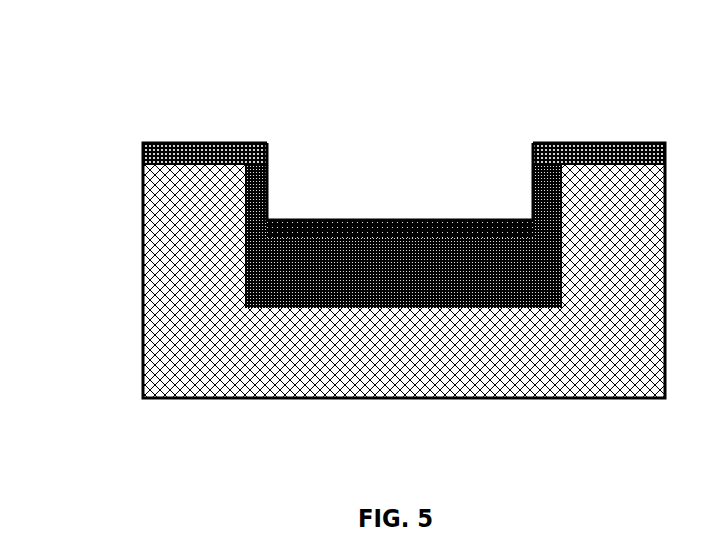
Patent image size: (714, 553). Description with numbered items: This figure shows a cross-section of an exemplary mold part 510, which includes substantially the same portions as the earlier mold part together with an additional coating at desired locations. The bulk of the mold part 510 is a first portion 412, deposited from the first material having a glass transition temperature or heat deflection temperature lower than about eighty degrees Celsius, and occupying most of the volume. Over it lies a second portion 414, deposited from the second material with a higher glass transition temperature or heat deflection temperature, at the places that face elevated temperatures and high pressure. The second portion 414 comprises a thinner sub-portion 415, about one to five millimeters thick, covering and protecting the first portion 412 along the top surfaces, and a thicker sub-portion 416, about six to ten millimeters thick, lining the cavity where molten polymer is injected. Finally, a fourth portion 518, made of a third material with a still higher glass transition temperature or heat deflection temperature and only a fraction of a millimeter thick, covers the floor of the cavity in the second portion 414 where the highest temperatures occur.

The mold part 510 is at (348, 210).
The first portion 412 is at (165, 225).
The second portion 414 is at (268, 158).
The thinner sub-portion 415 is at (200, 144).
The thicker sub-portion 416 is at (535, 277).
The fourth portion 518 is at (398, 219).